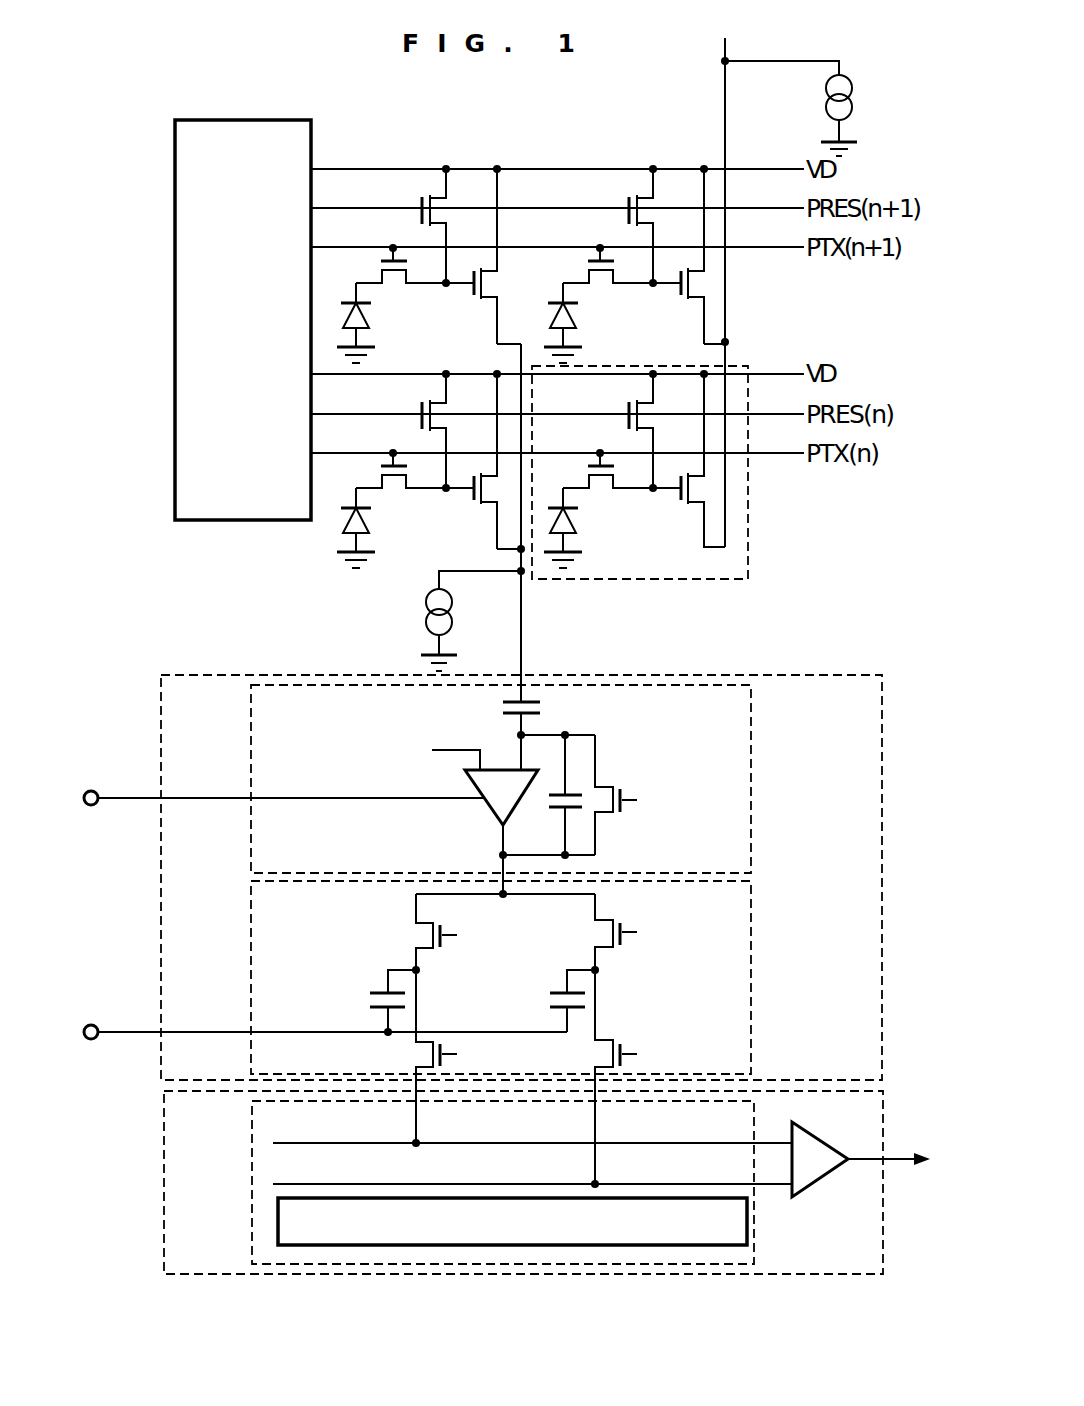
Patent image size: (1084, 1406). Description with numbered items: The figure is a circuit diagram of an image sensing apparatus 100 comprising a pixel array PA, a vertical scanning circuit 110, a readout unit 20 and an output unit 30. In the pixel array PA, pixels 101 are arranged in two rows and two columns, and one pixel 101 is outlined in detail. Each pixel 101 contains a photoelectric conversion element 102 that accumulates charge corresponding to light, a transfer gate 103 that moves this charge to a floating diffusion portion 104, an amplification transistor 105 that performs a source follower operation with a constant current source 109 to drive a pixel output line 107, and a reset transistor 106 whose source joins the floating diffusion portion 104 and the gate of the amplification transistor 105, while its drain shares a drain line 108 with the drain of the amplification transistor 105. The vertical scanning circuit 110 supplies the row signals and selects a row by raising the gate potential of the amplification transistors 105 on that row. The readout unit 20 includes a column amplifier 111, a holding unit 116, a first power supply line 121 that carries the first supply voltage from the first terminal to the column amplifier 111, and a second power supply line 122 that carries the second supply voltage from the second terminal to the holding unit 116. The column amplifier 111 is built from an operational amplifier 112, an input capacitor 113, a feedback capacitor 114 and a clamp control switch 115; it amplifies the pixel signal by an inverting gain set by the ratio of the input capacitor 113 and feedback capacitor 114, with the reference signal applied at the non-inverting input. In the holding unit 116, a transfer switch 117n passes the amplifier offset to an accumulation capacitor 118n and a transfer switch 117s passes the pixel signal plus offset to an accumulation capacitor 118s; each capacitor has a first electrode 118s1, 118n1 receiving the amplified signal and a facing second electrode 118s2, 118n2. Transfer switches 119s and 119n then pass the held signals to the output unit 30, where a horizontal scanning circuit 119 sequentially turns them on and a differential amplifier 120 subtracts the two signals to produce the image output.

The image sensing apparatus 100 is at (247, 1306).
The pixel 101 is at (748, 540).
The photoelectric conversion element 102 is at (578, 540).
The transfer gate 103 is at (600, 487).
The floating diffusion portion 104 is at (657, 490).
The amplification transistor 105 is at (706, 490).
The reset transistor 106 is at (628, 400).
The pixel output line 107 is at (733, 140).
The drain line 108 is at (767, 372).
The constant current source 109 is at (858, 97).
The vertical scanning circuit 110 is at (265, 118).
The column amplifier 111 is at (751, 727).
The operational amplifier 112 is at (484, 808).
The input capacitor 113 is at (545, 706).
The feedback capacitor 114 is at (548, 798).
The clamp control switch 115 is at (637, 769).
The holding unit 116 is at (751, 931).
The transfer switch 117s is at (430, 935).
The transfer switch 117n is at (616, 914).
The accumulation capacitor 118s is at (339, 991).
The first electrode 118s1 is at (367, 993).
The second electrode 118s2 is at (377, 984).
The accumulation capacitor 118n is at (518, 989).
The first electrode 118n1 is at (548, 993).
The second electrode 118n2 is at (587, 984).
The transfer switch 119s is at (430, 1055).
The transfer switch 119n is at (611, 1055).
The horizontal scanning circuit 119 is at (748, 1223).
The differential amplifier 120 is at (818, 1135).
The first power supply line 121 is at (222, 787).
The second power supply line 122 is at (225, 1027).
The readout unit 20 is at (882, 794).
The output unit 30 is at (883, 1229).
The pixel array PA is at (828, 584).